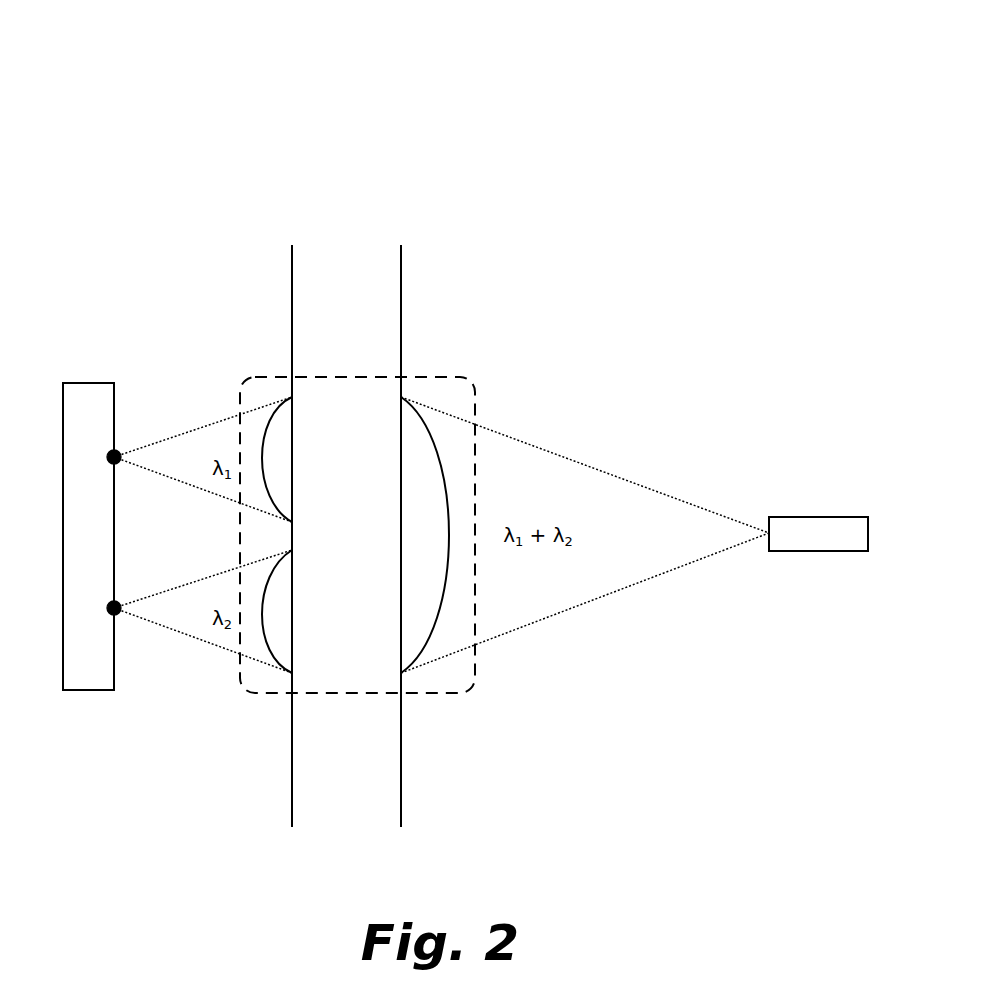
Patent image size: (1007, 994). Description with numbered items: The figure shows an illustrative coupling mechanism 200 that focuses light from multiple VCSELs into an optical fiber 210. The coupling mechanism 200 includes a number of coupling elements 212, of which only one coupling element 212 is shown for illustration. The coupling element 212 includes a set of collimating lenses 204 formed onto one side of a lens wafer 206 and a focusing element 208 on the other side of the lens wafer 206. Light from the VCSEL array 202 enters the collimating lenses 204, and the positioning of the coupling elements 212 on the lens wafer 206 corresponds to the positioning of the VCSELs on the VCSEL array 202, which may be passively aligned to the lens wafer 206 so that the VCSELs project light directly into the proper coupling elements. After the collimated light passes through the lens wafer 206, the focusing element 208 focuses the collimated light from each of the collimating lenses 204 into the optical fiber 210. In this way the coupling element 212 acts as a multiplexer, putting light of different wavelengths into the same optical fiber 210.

The coupling mechanism 200 is at (180, 192).
The VCSEL array 202 is at (95, 383).
The collimating lenses 204 is at (263, 437).
The lens wafer 206 is at (346, 536).
The focusing element 208 is at (433, 452).
The optical fiber 210 is at (821, 517).
The coupling element 212 is at (460, 693).